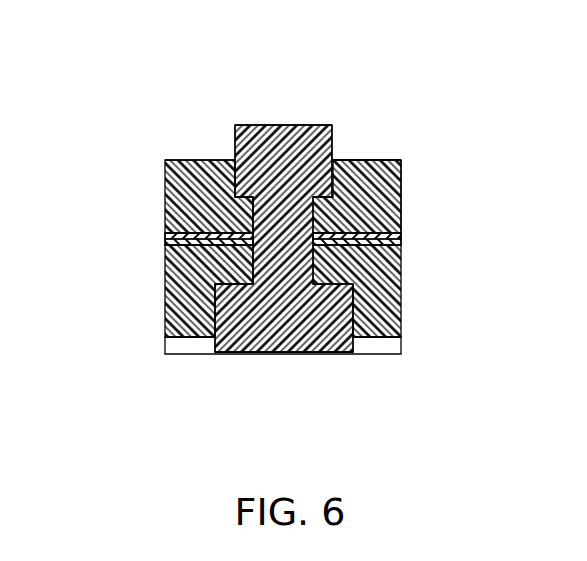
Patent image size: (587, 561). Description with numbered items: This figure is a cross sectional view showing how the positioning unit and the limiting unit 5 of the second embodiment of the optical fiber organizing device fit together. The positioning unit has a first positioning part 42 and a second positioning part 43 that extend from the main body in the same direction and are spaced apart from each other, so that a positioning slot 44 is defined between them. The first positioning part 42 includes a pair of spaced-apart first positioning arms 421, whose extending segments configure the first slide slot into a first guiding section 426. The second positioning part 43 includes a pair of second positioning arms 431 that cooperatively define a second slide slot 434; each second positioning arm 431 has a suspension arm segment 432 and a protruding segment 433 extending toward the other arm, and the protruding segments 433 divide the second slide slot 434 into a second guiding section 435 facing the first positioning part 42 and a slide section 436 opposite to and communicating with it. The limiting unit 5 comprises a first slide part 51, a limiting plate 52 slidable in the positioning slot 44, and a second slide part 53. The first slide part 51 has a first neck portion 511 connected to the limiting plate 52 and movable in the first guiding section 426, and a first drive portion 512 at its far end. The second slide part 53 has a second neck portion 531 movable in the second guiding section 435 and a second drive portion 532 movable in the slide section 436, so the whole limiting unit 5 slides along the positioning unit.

The limiting unit 5 is at (241, 245).
The first slide part 51 is at (260, 362).
The first neck portion 511 is at (215, 285).
The first drive portion 512 is at (322, 355).
The second slide part 53 is at (244, 112).
The second neck portion 531 is at (250, 214).
The second drive portion 532 is at (283, 123).
The limiting plate 52 is at (180, 236).
The first positioning part 42 is at (184, 364).
The first positioning arms 421 is at (162, 333).
The first guiding section 426 is at (390, 272).
The second positioning part 43 is at (252, 193).
The second positioning arms 431 is at (165, 155).
The suspension arm segment 432 is at (163, 167).
The protruding segment 433 is at (242, 193).
The second slide slot 434 is at (432, 202).
The second guiding section 435 is at (393, 227).
The slide section 436 is at (395, 177).
The positioning slot 44 is at (176, 242).